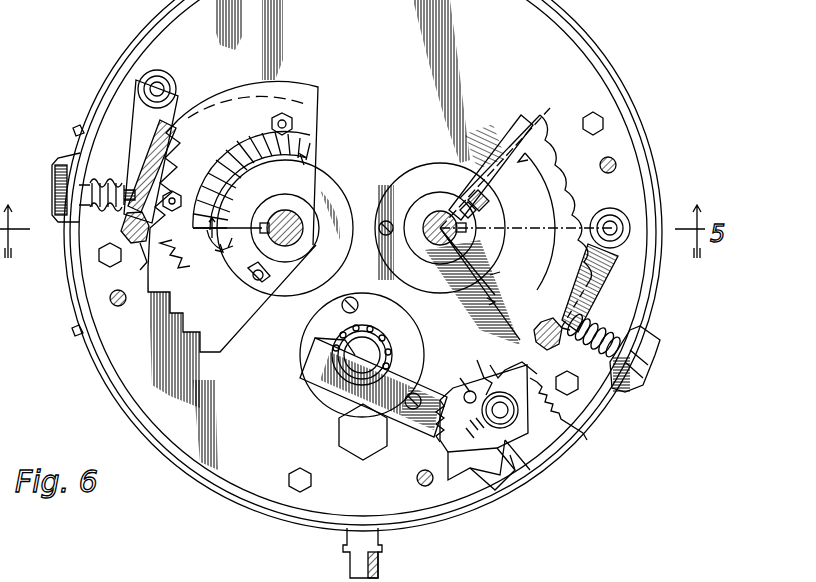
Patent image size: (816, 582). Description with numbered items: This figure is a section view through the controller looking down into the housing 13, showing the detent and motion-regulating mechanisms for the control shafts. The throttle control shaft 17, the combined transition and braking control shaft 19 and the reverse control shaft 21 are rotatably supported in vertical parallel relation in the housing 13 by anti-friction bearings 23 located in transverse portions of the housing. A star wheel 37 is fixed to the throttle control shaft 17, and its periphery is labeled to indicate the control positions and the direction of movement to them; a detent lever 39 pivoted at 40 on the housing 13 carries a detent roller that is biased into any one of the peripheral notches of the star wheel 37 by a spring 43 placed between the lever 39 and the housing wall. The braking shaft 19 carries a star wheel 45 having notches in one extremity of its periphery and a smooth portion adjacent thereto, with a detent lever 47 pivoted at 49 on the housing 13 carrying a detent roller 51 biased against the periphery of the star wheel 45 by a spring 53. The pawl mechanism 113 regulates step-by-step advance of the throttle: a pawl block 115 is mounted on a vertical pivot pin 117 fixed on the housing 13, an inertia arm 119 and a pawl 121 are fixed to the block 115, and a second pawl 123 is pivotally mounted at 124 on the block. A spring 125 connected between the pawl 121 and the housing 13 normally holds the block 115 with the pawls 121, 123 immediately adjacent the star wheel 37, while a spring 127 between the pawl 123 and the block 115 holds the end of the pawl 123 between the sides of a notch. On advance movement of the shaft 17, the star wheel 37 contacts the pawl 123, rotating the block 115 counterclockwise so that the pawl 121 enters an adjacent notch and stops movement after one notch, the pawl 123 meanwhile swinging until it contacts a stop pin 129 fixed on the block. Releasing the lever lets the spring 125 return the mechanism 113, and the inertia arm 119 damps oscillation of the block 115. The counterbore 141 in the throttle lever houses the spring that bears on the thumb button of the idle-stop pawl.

The housing 13 is at (622, 110).
The throttle control shaft 17 is at (438, 208).
The combined transition and braking control shaft 19 is at (300, 216).
The reverse control shaft 21 is at (368, 352).
The anti-friction bearings 23 is at (325, 340).
The star wheel 37 is at (514, 117).
The detent lever 39 is at (592, 283).
The pivot 40 is at (612, 208).
The spring 43 is at (585, 326).
The star wheel 45 is at (229, 327).
The detent lever 47 is at (132, 165).
The pivot 49 is at (170, 86).
The detent roller 51 is at (140, 258).
The spring 53 is at (121, 231).
The pawl mechanism 113 is at (495, 486).
The pawl block 115 is at (505, 455).
The pivot pin 117 is at (518, 425).
The inertia arm 119 is at (340, 400).
The pawl 121 is at (548, 356).
The second pawl 123 is at (462, 378).
The pivot 124 is at (480, 380).
The spring 125 is at (587, 402).
The spring 127 is at (430, 440).
The stop pin 129 is at (492, 366).
The counterbore 141 is at (520, 362).